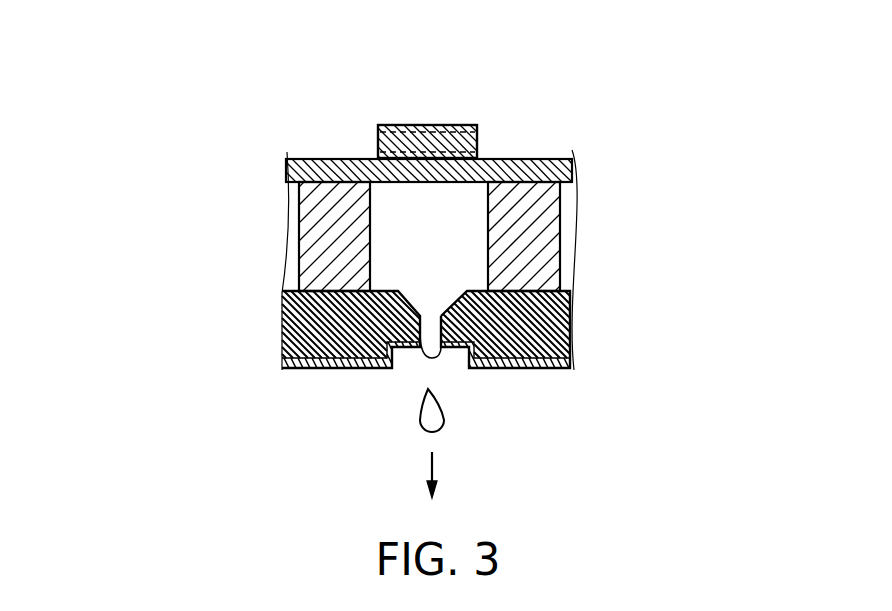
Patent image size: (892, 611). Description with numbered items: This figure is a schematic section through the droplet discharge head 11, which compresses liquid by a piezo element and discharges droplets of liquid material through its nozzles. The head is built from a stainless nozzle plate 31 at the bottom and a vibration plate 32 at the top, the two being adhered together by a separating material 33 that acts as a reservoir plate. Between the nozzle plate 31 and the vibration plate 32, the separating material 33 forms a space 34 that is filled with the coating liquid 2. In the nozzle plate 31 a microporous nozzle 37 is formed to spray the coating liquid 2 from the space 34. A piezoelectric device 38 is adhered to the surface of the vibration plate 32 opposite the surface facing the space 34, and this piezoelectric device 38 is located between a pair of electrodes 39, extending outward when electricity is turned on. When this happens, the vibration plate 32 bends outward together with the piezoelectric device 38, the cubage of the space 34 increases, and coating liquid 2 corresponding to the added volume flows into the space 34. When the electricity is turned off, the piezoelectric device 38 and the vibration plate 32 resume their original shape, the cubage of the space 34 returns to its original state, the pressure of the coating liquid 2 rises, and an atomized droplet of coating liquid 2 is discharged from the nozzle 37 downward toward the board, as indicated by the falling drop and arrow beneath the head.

The droplet discharge head 11 is at (499, 85).
The coating liquid 2 is at (444, 417).
The nozzle plate 31 is at (548, 330).
The vibration plate 32 is at (298, 176).
The separating material 33 is at (308, 247).
The space 34 is at (475, 222).
The nozzle 37 is at (433, 358).
The piezoelectric device 38 is at (478, 142).
The electrode 39 is at (413, 125).